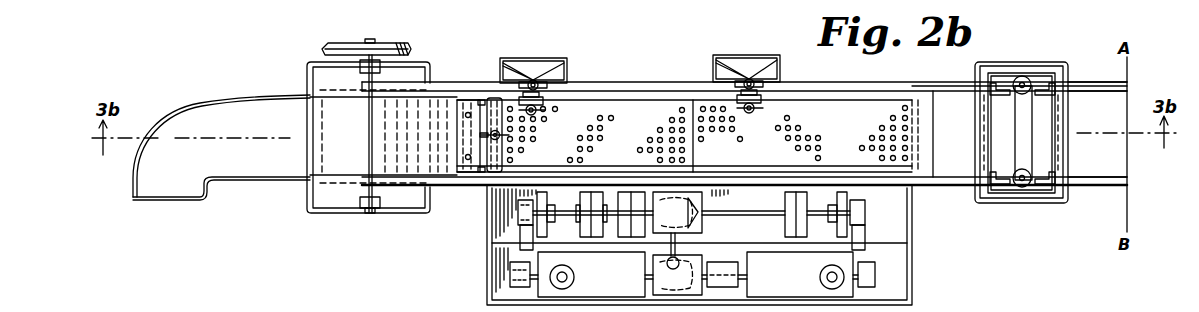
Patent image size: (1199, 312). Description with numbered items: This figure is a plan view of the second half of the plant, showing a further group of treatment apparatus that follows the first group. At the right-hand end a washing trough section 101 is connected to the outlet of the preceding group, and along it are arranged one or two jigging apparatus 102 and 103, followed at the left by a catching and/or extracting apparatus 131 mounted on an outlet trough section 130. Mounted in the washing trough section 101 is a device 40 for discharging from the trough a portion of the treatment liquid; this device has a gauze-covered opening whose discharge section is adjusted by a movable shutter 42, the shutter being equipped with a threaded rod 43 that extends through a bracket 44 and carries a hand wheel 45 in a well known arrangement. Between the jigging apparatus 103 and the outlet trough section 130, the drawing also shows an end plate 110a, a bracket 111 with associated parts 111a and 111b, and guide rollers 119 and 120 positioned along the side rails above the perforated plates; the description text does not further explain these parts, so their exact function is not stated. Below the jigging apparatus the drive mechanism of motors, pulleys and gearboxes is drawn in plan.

The discharge device 40 is at (1049, 211).
The movable shutter 42 is at (1000, 82).
The threaded rod 43 is at (1020, 184).
The bracket 44 is at (1030, 125).
The hand wheel 45 is at (1027, 78).
The washing trough section 101 is at (1105, 172).
The jigging apparatus 102 is at (848, 108).
The jigging apparatus 103 is at (623, 110).
The end plate 110a is at (470, 177).
The bracket 111 is at (482, 95).
The plate holes 111a is at (516, 153).
The roller on bracket 111b is at (504, 135).
The guide roller 119 is at (552, 97).
The lower guide roller 120 is at (540, 112).
The outlet trough section 130 is at (452, 101).
The catching and/or extracting apparatus 131 is at (375, 140).